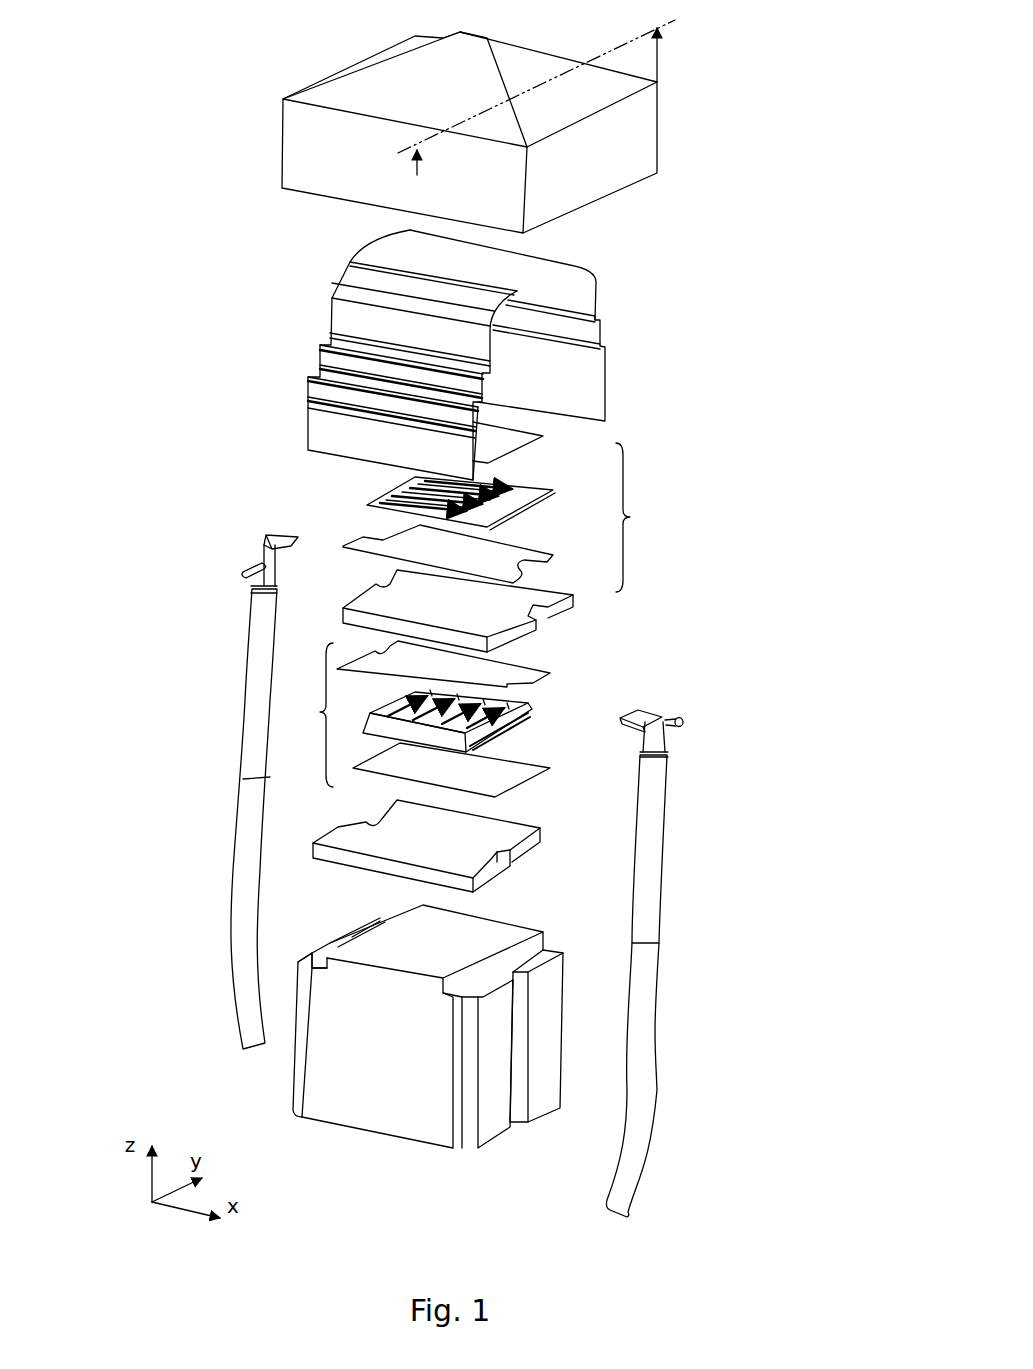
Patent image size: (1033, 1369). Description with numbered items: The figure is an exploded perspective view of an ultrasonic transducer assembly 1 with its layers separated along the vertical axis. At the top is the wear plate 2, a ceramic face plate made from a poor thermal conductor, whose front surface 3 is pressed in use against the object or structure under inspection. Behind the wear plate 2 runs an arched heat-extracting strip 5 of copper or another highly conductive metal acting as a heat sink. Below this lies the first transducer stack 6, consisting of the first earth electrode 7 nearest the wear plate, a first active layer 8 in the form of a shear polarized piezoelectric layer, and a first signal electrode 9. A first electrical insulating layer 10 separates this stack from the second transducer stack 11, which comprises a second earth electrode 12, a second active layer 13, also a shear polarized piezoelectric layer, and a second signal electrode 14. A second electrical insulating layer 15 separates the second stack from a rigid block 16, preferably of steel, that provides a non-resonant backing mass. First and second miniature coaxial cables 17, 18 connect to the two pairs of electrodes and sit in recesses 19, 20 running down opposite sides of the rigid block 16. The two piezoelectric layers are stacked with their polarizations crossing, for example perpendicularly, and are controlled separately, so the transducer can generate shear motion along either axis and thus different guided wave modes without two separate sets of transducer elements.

The ultrasonic transducer assembly 1 is at (231, 352).
The wear plate 2 is at (641, 148).
The front surface 3 is at (521, 62).
The heat-extracting strip 5 is at (588, 388).
The first transducer stack 6 is at (633, 517).
The first earth electrode 7 is at (512, 440).
The first active layer 8 is at (516, 503).
The first signal electrode 9 is at (547, 557).
The first electrical insulating layer 10 is at (543, 612).
The second transducer stack 11 is at (309, 715).
The second earth electrode 12 is at (537, 678).
The second active layer 13 is at (518, 725).
The second signal electrode 14 is at (517, 775).
The second electrical insulating layer 15 is at (517, 843).
The rigid block 16 is at (431, 1037).
The first miniature coaxial cable 17 is at (243, 749).
The second miniature coaxial cable 18 is at (644, 870).
The recess 19 is at (340, 937).
The recess 20 is at (521, 966).